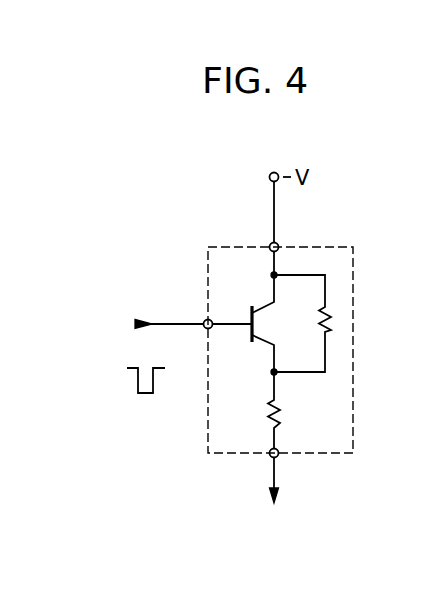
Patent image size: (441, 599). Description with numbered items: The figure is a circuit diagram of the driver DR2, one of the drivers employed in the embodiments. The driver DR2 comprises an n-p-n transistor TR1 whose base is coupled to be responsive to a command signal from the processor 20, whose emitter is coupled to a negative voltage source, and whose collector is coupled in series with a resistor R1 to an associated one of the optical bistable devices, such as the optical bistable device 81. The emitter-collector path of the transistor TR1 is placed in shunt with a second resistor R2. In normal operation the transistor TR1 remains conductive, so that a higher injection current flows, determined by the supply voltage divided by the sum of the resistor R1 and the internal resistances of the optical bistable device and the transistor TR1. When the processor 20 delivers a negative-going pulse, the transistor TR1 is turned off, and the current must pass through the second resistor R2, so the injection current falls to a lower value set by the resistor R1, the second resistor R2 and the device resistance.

The n-p-n transistor TR1 is at (250, 317).
The resistor R1 is at (281, 410).
The second resistor R2 is at (331, 326).
The driver DR2 is at (353, 405).
The processor 20 is at (122, 325).
The optical bistable device 81 is at (294, 509).